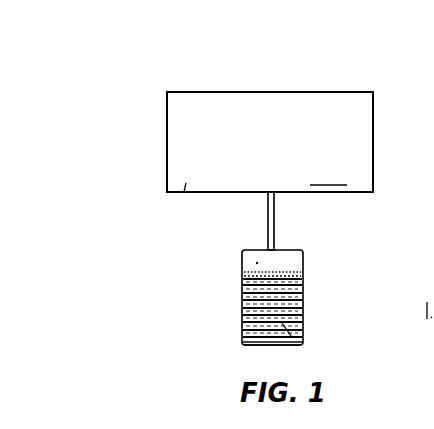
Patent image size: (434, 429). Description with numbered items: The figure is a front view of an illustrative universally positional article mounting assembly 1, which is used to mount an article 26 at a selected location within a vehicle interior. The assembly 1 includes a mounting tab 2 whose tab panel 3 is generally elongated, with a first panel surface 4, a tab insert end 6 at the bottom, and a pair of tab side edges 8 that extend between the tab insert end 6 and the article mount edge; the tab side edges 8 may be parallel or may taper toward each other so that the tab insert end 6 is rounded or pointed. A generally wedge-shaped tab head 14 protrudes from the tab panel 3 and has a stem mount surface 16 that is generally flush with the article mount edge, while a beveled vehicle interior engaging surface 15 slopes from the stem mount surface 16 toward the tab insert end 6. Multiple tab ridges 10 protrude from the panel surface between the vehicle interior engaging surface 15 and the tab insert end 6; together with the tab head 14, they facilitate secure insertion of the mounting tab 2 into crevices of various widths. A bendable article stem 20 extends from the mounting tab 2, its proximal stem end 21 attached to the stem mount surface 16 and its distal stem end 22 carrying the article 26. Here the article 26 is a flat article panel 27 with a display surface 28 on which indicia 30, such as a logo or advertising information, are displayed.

The universally positional article mounting assembly 1 is at (144, 50).
The mounting tab 2 is at (340, 246).
The tab panel 3 is at (306, 302).
The first panel surface 4 is at (303, 335).
The tab insert end 6 is at (275, 345).
The tab side edges 8 is at (243, 323).
The tab ridges 10 is at (243, 297).
The tab head 14 is at (306, 276).
The vehicle interior engaging surface 15 is at (256, 263).
The stem mount surface 16 is at (284, 249).
The article stem 20 is at (285, 227).
The proximal stem end 21 is at (268, 249).
The distal stem end 22 is at (263, 200).
The article 26 is at (163, 143).
The article panel 27 is at (184, 194).
The display surface 28 is at (328, 175).
The indicia 30 is at (297, 118).